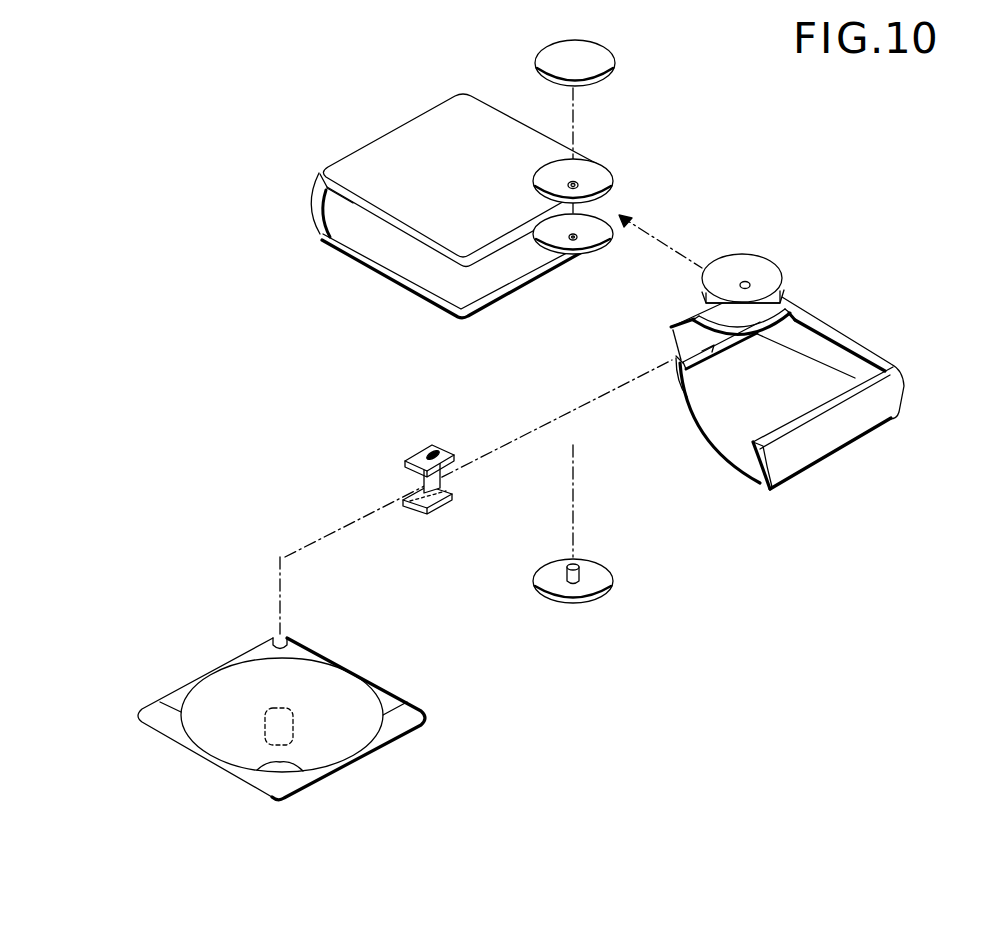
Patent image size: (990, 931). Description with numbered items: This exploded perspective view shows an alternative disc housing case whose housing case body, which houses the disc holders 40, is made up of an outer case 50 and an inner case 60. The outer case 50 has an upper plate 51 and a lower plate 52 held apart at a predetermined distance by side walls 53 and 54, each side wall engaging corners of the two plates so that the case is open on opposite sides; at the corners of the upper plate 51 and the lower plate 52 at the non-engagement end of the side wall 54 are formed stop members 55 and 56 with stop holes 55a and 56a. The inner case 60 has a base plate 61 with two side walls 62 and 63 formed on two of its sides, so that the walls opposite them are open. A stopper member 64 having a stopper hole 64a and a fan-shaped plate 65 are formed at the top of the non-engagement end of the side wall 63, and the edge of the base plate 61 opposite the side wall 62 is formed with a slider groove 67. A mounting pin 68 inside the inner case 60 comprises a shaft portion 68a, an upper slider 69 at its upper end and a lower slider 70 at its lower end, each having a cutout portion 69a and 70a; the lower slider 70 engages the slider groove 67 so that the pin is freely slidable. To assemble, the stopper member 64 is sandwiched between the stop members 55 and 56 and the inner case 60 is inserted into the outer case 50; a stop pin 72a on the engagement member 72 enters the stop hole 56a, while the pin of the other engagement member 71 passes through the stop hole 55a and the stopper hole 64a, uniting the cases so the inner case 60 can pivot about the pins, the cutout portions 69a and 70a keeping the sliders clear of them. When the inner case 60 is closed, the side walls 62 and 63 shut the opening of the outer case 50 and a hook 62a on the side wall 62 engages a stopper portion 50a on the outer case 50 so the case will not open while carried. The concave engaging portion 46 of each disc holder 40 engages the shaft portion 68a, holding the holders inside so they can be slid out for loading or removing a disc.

The disc holder 40 is at (222, 770).
The concave engaging portion 46 is at (288, 641).
The outer case 50 is at (366, 130).
The stopper portion 50a is at (318, 222).
The upper plate 51 is at (462, 126).
The lower plate 52 is at (425, 288).
The side wall 53 is at (341, 210).
The side wall 54 is at (537, 122).
The stop member 55 is at (605, 187).
The stop hole 55a is at (577, 182).
The stop member 56 is at (600, 252).
The stop hole 56a is at (571, 243).
The inner case 60 is at (870, 335).
The base plate 61 is at (735, 450).
The side wall 62 is at (853, 428).
The hook 62a is at (758, 470).
The side wall 63 is at (862, 374).
The stopper member 64 is at (772, 278).
The stopper hole 64a is at (744, 283).
The fan-shaped plate 65 is at (688, 310).
The slider groove 67 is at (690, 388).
The mounting pin 68 is at (455, 440).
The shaft portion 68a is at (452, 478).
The upper slider 69 is at (410, 462).
The cutout portion 69a is at (437, 452).
The lower slider 70 is at (422, 508).
The cutout portion 70a is at (455, 492).
The engagement member 71 is at (597, 60).
The engagement member 72 is at (592, 598).
The stop pin 72a is at (582, 576).